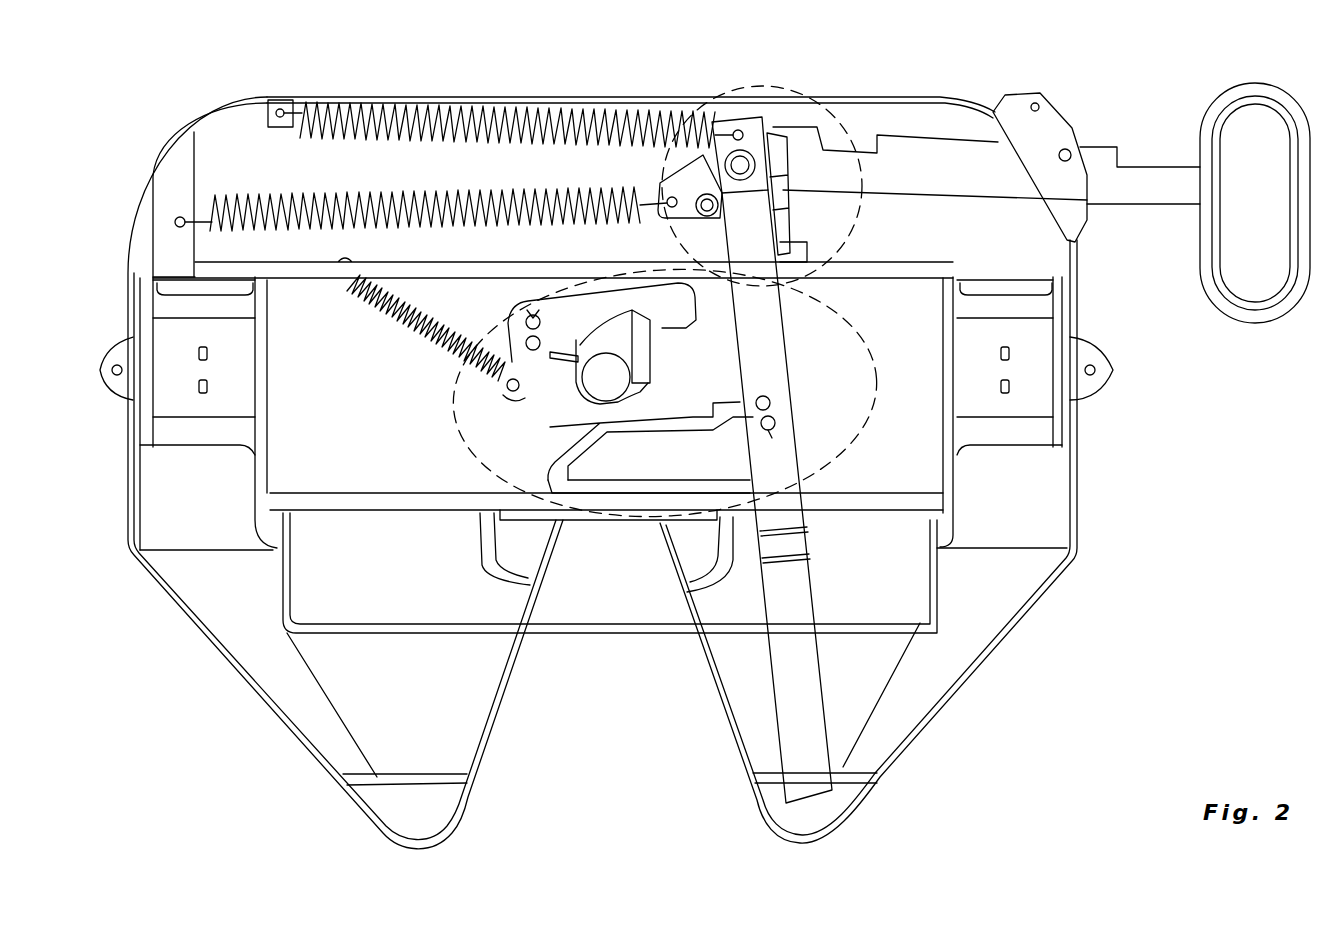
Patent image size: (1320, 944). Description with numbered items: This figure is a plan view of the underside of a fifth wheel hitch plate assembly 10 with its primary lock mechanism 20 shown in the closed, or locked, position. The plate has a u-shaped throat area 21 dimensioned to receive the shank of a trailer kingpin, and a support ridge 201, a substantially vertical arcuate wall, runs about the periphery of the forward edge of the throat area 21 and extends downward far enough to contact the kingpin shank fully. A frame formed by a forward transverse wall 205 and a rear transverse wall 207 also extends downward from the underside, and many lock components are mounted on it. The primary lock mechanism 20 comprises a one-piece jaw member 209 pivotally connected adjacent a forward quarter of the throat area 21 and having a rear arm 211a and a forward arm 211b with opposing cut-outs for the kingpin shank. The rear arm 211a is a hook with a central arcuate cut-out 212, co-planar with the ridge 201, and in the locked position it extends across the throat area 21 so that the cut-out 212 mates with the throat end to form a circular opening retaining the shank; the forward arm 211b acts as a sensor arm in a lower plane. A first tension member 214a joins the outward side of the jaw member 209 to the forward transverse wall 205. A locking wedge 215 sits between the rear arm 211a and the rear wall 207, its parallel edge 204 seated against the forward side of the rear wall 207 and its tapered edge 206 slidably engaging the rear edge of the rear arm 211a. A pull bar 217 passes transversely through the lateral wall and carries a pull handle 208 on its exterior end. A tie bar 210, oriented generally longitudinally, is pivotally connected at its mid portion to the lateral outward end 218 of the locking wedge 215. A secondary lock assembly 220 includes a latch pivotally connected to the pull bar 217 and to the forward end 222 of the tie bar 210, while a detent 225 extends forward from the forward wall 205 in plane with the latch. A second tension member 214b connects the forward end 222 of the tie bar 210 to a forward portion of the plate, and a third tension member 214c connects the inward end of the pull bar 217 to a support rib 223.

The hitch plate assembly 10 is at (1190, 433).
The primary lock mechanism 20 is at (830, 315).
The u-shaped throat area 21 is at (612, 372).
The support ridge 201 is at (640, 342).
The parallel edge 204 is at (620, 515).
The forward transverse wall 205 is at (933, 267).
The tapered edge 206 is at (593, 427).
The rear transverse wall 207 is at (857, 490).
The pull handle 208 is at (1234, 316).
The jaw member 209 is at (530, 388).
The tie bar 210 is at (813, 690).
The rear arm 211a is at (640, 410).
The forward arm 211b is at (600, 307).
The arcuate cut-out 212 is at (613, 412).
The first tension member 214a is at (383, 313).
The second tension member 214b is at (367, 133).
The third tension member 214c is at (463, 195).
The locking wedge 215 is at (550, 472).
The pull bar 217 is at (1137, 198).
The lateral outward end 218 is at (790, 432).
The secondary lock assembly 220 is at (830, 126).
The forward end of the tie bar 222 is at (753, 123).
The support rib 223 is at (182, 185).
The detent 225 is at (807, 253).